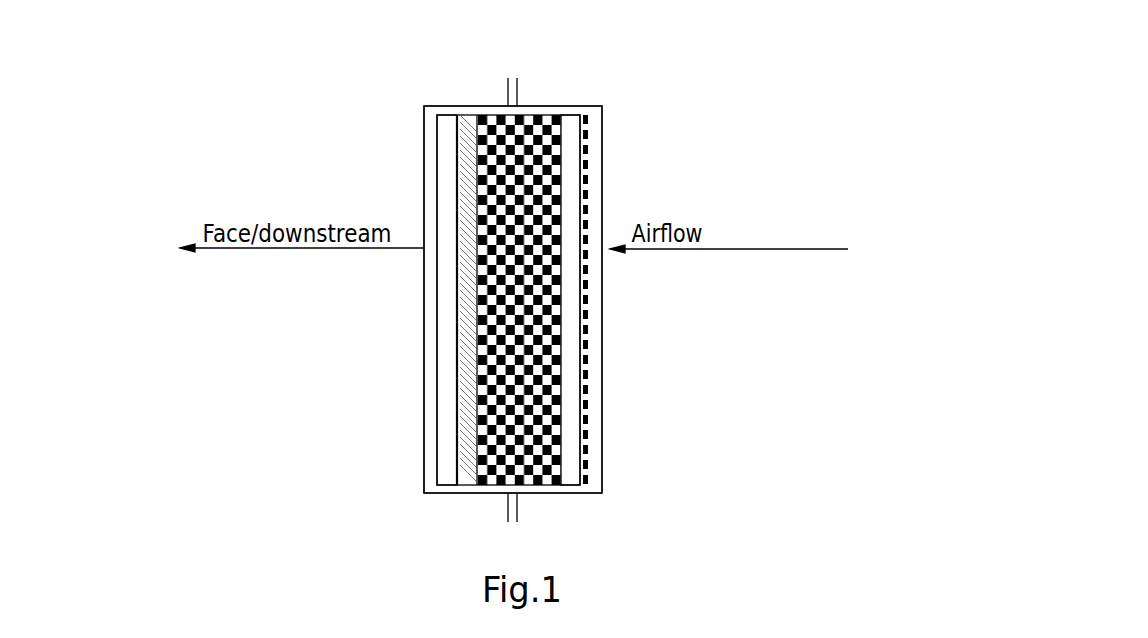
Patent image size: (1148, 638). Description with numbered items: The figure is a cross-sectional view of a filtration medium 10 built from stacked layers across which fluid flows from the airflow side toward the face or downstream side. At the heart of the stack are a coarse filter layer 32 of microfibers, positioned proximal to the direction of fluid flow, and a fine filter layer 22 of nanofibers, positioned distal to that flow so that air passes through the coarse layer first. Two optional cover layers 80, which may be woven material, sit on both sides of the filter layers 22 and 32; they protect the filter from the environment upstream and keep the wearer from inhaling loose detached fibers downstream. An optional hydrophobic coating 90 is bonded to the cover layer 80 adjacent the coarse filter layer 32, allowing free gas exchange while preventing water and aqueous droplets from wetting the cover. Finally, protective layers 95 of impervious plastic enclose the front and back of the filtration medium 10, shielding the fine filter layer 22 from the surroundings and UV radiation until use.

The filtration medium 10 is at (428, 80).
The fine filter layer 22 is at (463, 472).
The coarse filter layer 32 is at (495, 472).
The cover layer 80 is at (450, 473).
The hydrophobic coating 90 is at (588, 390).
The protective layer 95 is at (425, 414).